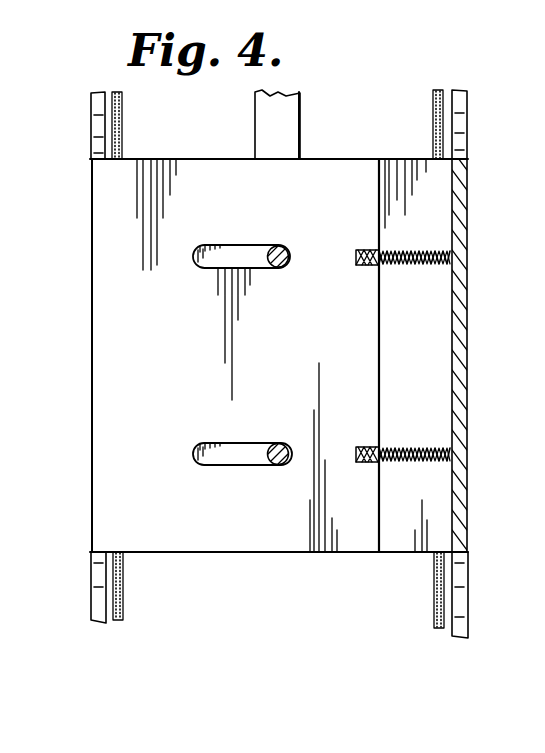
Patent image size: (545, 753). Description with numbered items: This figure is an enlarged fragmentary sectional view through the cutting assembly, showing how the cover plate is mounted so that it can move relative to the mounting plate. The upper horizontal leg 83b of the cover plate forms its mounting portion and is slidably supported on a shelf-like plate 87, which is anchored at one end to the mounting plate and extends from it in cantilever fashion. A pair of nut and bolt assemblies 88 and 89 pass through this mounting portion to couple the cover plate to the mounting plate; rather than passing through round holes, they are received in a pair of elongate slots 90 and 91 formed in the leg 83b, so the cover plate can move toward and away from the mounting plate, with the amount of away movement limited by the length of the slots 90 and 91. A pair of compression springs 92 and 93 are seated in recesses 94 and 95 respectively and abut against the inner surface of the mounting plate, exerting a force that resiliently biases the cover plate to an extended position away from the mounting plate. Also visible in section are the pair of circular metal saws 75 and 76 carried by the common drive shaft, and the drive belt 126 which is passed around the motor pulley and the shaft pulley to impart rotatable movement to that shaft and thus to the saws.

The circular metal saw 75 is at (124, 117).
The circular metal saw 76 is at (433, 106).
The drive belt 126 is at (265, 112).
The upper horizontal leg 83b is at (316, 168).
The shelf-like plate 87 is at (410, 553).
The nut and bolt assembly 88 is at (275, 445).
The nut and bolt assembly 89 is at (281, 270).
The elongate slot 90 is at (228, 446).
The elongate slot 91 is at (209, 270).
The compression spring 92 is at (437, 250).
The compression spring 93 is at (428, 447).
The recess 94 is at (365, 268).
The recess 95 is at (362, 446).